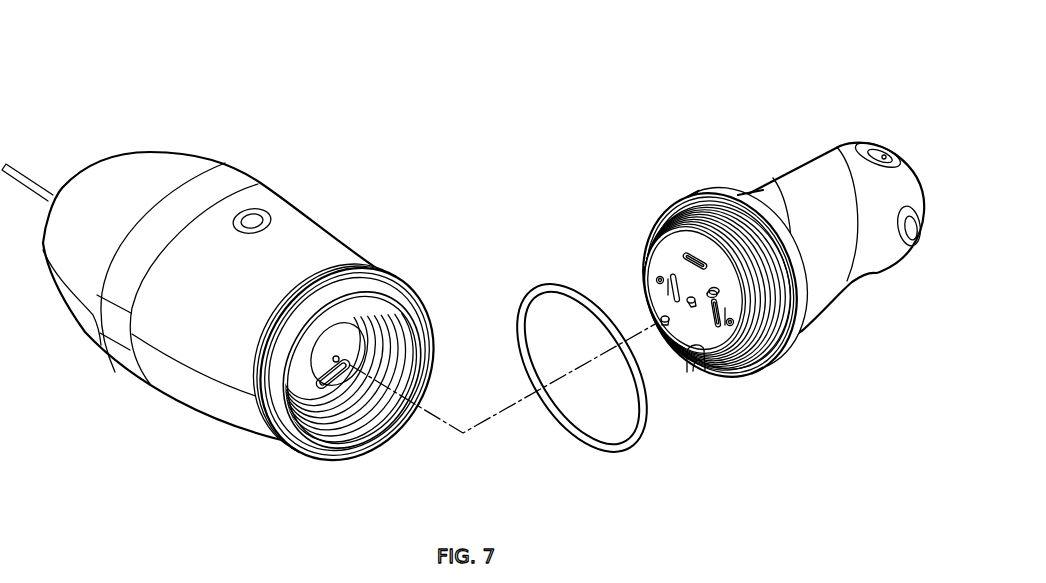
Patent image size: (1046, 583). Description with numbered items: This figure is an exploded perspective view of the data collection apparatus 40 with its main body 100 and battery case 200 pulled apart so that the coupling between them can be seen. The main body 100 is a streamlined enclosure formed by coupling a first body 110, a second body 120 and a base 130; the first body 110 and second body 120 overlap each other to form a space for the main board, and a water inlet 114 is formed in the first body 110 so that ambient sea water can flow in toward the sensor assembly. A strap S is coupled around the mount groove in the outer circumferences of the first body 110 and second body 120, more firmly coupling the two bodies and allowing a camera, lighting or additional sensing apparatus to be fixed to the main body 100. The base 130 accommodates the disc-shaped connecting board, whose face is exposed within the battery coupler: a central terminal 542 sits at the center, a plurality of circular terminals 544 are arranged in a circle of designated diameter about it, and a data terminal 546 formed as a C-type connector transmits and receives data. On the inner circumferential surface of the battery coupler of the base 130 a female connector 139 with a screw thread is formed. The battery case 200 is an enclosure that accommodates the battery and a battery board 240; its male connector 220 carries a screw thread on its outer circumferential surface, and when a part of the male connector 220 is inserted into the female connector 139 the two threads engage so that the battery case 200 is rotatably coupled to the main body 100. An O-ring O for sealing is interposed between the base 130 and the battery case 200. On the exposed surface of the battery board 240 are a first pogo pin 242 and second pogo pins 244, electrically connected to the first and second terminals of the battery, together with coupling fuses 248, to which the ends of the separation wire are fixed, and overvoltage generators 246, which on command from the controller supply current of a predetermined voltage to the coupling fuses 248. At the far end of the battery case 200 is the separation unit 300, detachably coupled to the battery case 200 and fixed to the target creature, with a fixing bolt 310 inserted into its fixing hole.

The main body 100 is at (234, 254).
The first body 110 is at (165, 163).
The second body 120 is at (198, 393).
The base 130 is at (280, 404).
The female connector 139 is at (404, 365).
The water inlet 114 is at (254, 221).
The data collection apparatus 40 is at (41, 181).
The strap S is at (206, 180).
The central terminal 542 is at (365, 376).
The circular terminals 544 is at (383, 317).
The data terminal 546 is at (330, 380).
The O-ring O is at (572, 434).
The battery case 200 is at (828, 286).
The male connector 220 is at (768, 363).
The battery board 240 is at (664, 260).
The first pogo pin 242 is at (692, 372).
The second pogo pins 244 is at (718, 328).
The overvoltage generators 246 is at (663, 290).
The coupling fuses 248 is at (657, 278).
The separation unit 300 is at (846, 141).
The fixing bolt 310 is at (878, 146).